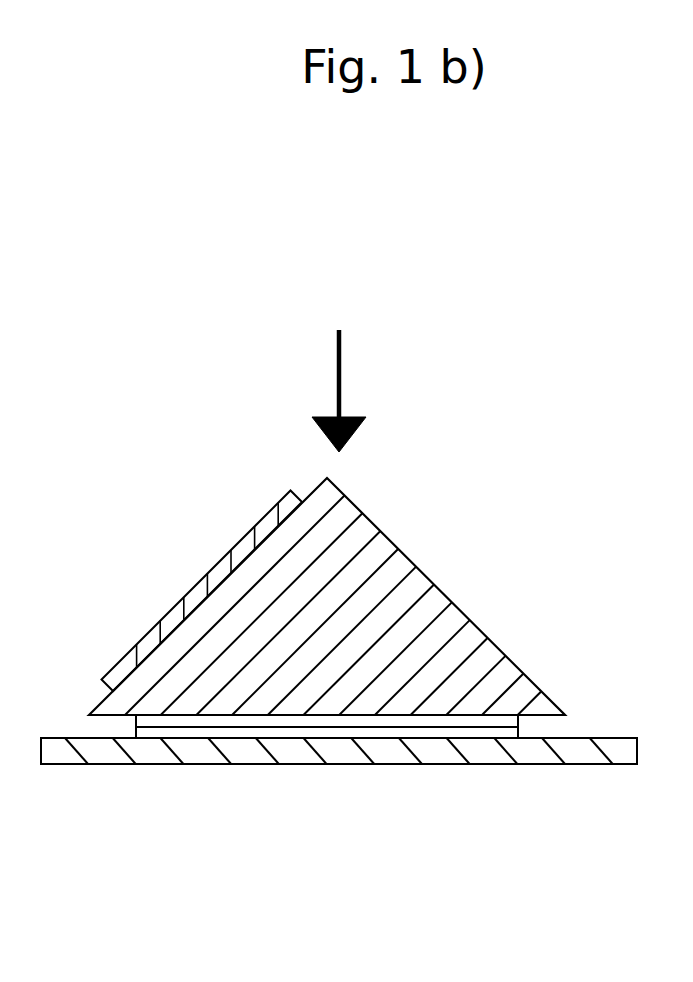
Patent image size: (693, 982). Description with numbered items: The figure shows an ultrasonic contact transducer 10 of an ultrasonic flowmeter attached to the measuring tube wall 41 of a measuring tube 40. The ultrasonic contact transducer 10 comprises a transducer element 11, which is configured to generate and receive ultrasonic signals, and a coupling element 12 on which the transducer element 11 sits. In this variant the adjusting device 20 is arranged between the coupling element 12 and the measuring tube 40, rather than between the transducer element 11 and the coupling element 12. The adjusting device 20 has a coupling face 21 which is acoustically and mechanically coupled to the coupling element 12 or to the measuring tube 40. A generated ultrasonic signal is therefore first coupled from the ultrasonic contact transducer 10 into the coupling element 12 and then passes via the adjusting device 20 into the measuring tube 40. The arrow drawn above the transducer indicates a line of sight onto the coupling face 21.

The ultrasonic contact transducer 10 is at (255, 443).
The transducer element 11 is at (223, 572).
The coupling element 12 is at (310, 567).
The adjusting device 20 is at (160, 727).
The coupling face 21 is at (468, 738).
The measuring tube 40 is at (602, 748).
The measuring tube wall 41 is at (209, 752).